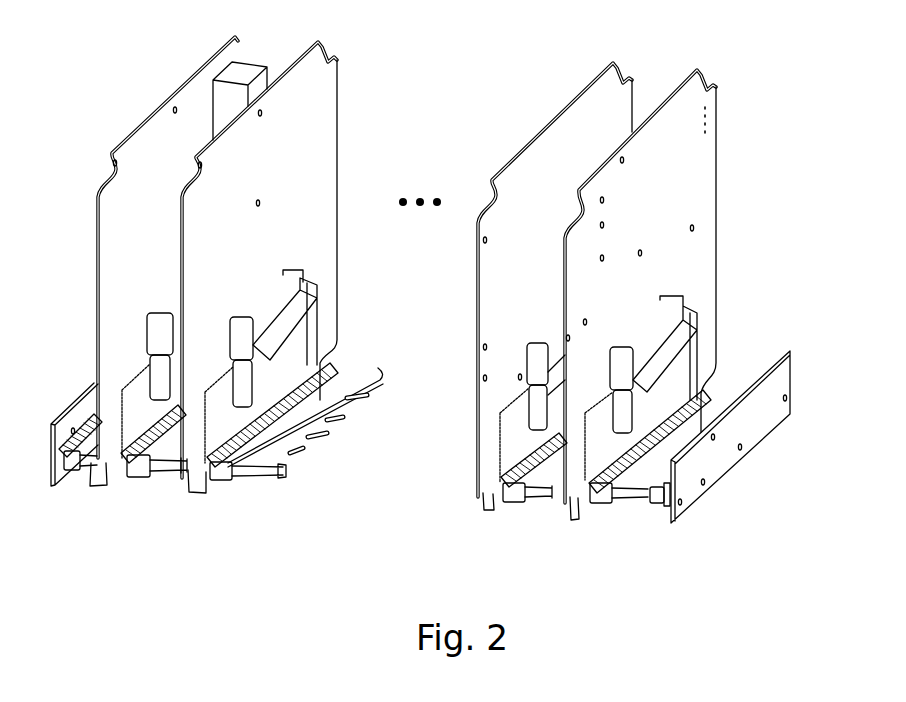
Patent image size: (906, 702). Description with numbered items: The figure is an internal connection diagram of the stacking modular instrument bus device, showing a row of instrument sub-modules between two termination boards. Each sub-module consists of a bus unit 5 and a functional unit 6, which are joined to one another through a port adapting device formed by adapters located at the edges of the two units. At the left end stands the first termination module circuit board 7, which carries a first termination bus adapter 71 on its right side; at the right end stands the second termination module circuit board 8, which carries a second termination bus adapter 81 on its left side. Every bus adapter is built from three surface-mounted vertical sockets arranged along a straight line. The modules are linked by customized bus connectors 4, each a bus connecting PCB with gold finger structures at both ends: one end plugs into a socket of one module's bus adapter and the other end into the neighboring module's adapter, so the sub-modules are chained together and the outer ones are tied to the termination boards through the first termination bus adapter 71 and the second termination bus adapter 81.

The customized bus connector 4 is at (612, 502).
The bus unit of instrument sub-module 5 is at (603, 440).
The functional unit of instrument sub-module 6 is at (597, 187).
The first termination module circuit board 7 is at (82, 420).
The first termination bus adapter 71 is at (73, 457).
The second termination module circuit board 8 is at (745, 410).
The second termination bus adapter 81 is at (660, 495).